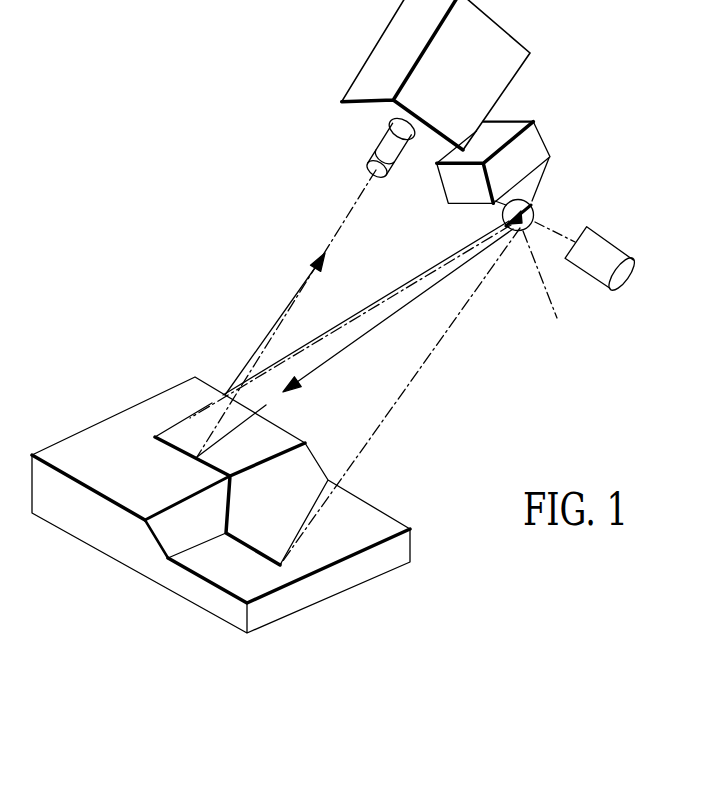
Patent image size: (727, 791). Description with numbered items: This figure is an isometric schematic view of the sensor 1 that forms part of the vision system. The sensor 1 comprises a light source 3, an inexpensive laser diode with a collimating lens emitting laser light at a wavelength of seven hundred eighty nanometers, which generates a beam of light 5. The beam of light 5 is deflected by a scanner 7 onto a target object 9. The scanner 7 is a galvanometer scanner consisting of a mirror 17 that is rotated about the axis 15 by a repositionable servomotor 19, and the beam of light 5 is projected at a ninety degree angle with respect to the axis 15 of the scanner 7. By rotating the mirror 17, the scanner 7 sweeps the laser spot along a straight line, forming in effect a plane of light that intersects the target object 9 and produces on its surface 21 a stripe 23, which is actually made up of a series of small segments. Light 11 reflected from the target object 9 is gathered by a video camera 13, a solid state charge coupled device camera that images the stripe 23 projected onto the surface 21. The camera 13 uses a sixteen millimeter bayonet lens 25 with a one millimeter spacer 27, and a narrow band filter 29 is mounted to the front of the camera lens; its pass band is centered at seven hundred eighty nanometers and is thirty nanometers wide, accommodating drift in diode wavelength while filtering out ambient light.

The sensor 1 is at (629, 46).
The light source 3 is at (604, 249).
The beam of light 5 is at (556, 234).
The scanner 7 is at (580, 148).
The target object 9 is at (100, 533).
The reflected light 11 is at (296, 300).
The video camera 13 is at (486, 45).
The axis of the scanner 15 is at (548, 298).
The mirror 17 is at (533, 203).
The servomotor 19 is at (530, 146).
The surface 21 is at (84, 443).
The stripe 23 is at (257, 553).
The bayonet lens 25 is at (380, 144).
The spacer 27 is at (380, 125).
The narrow band filter 29 is at (371, 169).